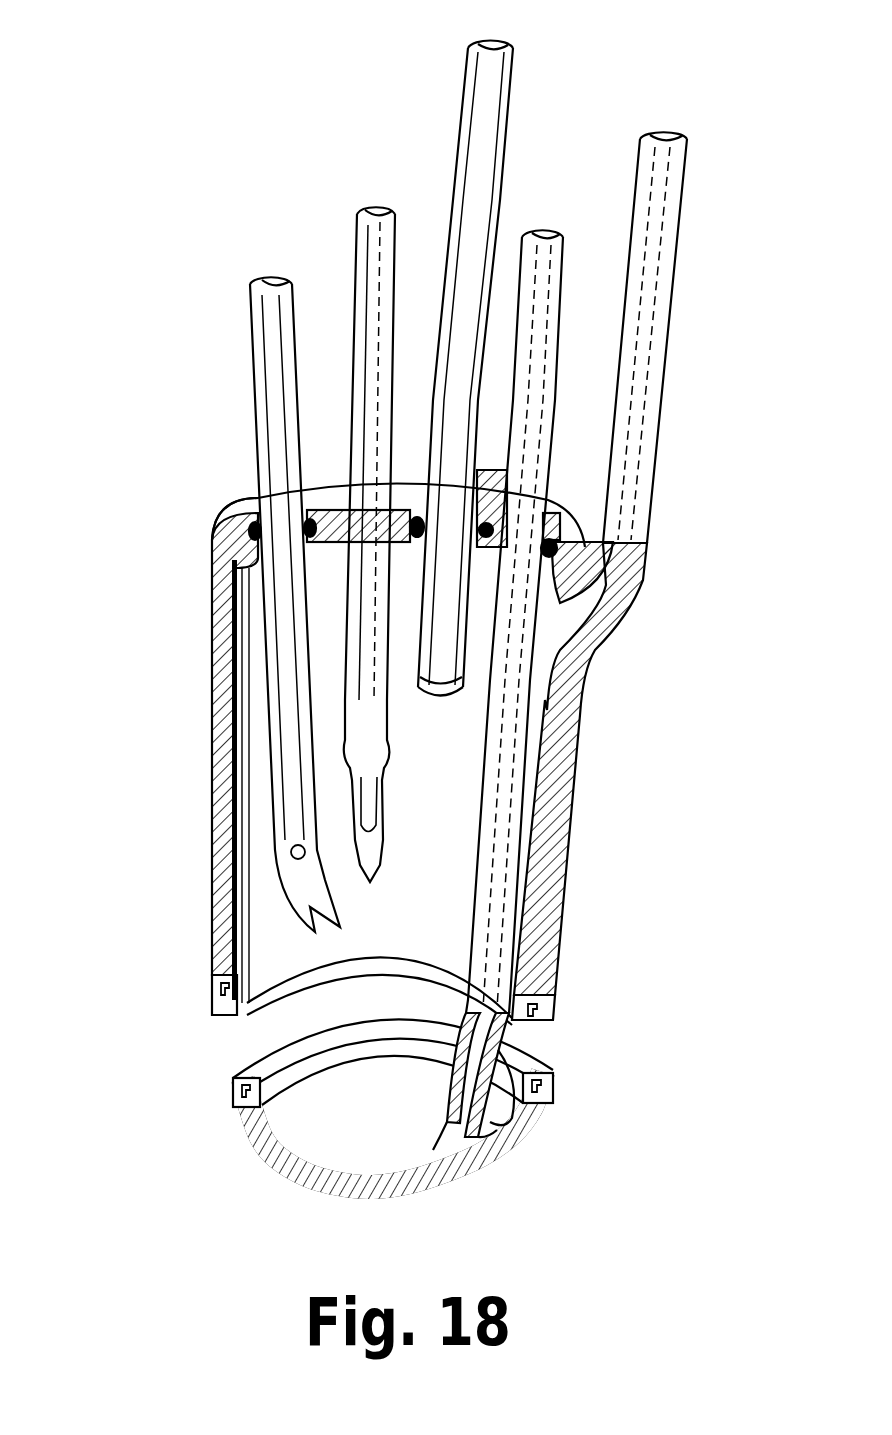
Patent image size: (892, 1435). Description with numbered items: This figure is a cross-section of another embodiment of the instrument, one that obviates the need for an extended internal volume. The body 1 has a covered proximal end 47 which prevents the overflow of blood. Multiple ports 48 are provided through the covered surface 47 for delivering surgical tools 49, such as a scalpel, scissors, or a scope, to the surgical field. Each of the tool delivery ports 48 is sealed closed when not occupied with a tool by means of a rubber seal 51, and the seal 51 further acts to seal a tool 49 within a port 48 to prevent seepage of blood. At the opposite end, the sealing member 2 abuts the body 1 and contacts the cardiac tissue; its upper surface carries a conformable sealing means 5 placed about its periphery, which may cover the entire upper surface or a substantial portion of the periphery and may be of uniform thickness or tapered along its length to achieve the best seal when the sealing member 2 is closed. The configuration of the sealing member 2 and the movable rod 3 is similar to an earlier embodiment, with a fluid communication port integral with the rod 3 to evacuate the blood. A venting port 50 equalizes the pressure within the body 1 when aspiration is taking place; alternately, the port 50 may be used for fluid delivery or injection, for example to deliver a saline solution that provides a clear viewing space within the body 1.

The body 1 is at (228, 778).
The sealing member 2 is at (307, 1173).
The movable rod 3 is at (497, 858).
The conformable sealing means 5 is at (240, 1073).
The covered proximal end 47 is at (317, 497).
The ports 48 is at (478, 478).
The surgical tools 49 is at (377, 313).
The venting port 50 is at (608, 610).
The rubber seal 51 is at (222, 502).